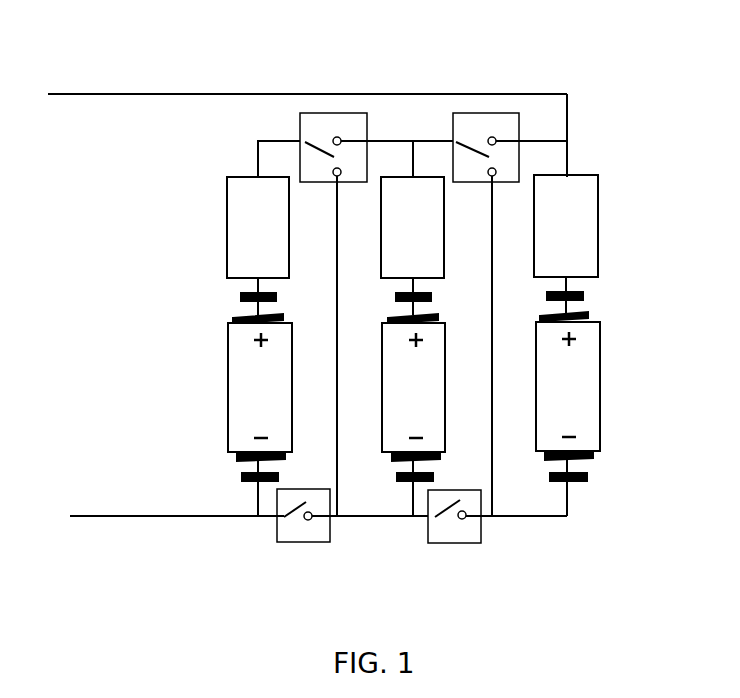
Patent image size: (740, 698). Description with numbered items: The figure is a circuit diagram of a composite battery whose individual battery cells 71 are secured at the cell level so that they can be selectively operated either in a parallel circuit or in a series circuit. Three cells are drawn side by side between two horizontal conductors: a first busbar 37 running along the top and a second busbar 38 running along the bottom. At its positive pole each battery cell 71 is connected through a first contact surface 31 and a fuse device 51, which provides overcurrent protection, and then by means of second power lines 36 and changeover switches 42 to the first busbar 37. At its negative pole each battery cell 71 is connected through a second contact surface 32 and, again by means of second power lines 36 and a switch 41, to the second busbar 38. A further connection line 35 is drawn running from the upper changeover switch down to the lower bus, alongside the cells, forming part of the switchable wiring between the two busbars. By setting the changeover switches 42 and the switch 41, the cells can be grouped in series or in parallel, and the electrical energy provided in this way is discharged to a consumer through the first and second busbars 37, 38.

The first busbar 37 is at (102, 93).
The second busbar 38 is at (101, 517).
The second power lines 36 is at (385, 142).
The changeover switches 42 is at (495, 113).
The switch 41 is at (433, 543).
The connection line 35 is at (493, 463).
The fuse device 51 is at (599, 219).
The first contact surface 31 is at (583, 295).
The battery cells 71 is at (602, 390).
The second contact surface 32 is at (585, 473).